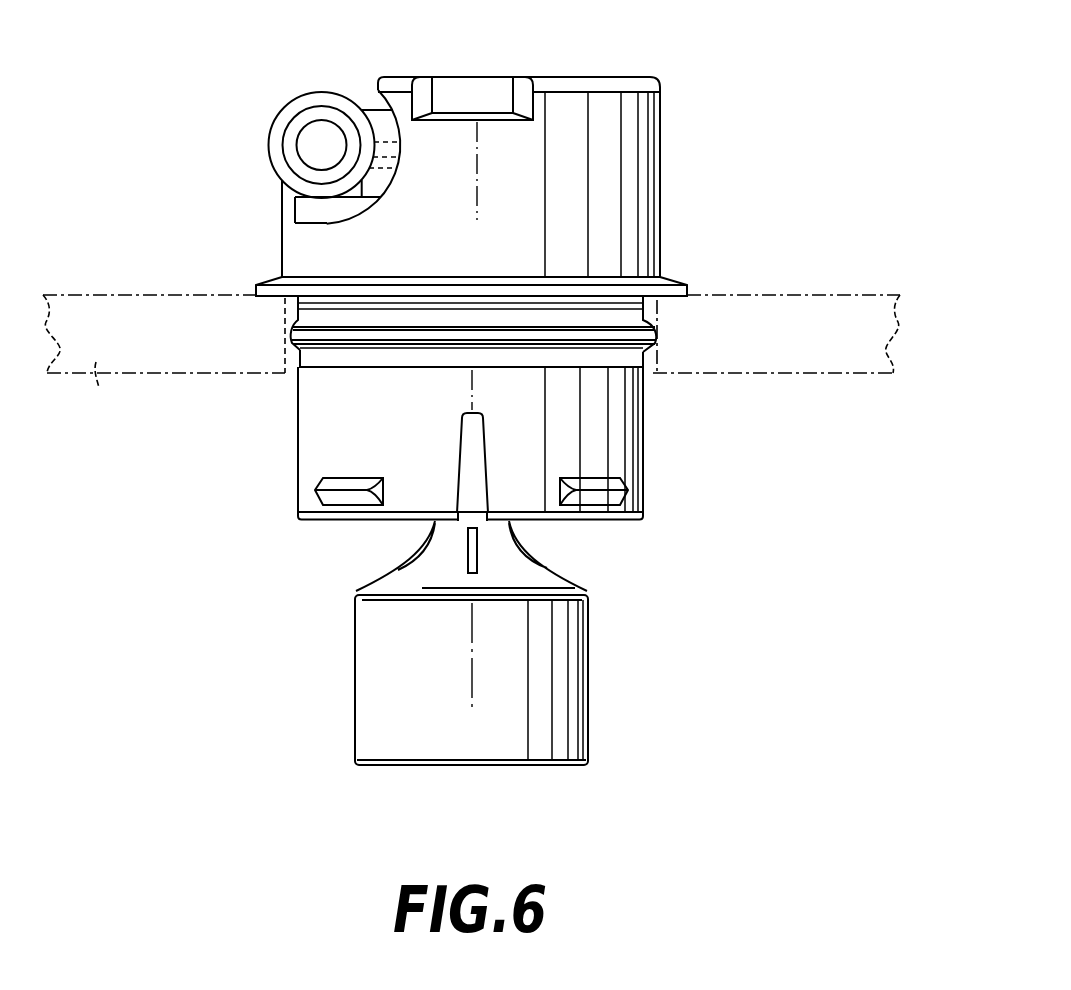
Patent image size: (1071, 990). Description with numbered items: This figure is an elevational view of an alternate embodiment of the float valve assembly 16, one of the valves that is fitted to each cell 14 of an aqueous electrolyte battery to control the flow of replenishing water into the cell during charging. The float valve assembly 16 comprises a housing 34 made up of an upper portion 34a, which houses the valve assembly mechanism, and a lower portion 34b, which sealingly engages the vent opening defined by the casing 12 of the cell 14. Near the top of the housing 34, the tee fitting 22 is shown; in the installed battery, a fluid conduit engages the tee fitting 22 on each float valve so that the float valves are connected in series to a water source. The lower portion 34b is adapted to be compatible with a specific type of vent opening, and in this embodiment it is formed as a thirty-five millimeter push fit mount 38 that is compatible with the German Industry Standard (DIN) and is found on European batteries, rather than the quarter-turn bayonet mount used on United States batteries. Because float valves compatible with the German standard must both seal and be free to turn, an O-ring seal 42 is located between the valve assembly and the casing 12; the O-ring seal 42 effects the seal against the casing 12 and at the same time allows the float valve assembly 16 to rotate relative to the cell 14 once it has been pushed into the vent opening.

The casing 12 is at (96, 363).
The cell 14 is at (174, 515).
The float valve assembly 16 is at (662, 105).
The tee fitting 22 is at (302, 140).
The housing 34 is at (662, 143).
The upper portion 34a is at (662, 203).
The lower portion 34b is at (632, 420).
The push fit mount 38 is at (298, 372).
The O-ring seal 42 is at (287, 340).